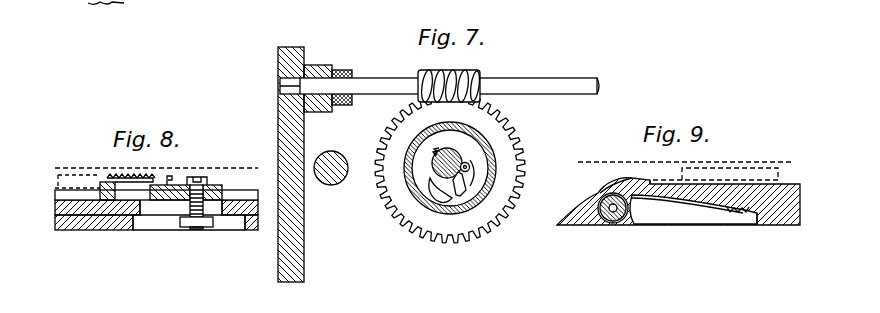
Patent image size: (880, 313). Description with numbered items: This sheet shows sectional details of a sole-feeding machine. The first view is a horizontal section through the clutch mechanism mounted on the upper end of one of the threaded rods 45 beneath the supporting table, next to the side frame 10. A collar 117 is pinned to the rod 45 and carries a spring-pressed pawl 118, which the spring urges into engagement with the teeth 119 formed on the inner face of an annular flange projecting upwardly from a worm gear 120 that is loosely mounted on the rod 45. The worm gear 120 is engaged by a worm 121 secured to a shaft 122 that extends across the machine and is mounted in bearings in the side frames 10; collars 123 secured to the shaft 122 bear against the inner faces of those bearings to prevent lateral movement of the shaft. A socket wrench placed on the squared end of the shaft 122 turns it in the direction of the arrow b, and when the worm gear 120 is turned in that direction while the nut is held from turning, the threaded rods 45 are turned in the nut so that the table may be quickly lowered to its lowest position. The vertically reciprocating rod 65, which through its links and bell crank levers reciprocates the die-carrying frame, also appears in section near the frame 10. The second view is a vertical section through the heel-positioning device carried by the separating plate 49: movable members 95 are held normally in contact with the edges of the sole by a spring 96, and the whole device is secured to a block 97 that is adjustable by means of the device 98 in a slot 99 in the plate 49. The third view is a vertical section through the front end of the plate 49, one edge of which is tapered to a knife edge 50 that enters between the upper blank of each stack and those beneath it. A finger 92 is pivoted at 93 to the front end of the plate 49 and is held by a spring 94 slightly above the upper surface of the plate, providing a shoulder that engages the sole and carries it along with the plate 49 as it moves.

In FIG. 7, the side frame 10 is at (278, 130).
In FIG. 7, the threaded rod 45 is at (436, 174).
In FIG. 8, the separating plate 49 is at (88, 222).
In FIG. 9, the separating plate 49 is at (770, 226).
In FIG. 9, the knife edge 50 is at (575, 219).
In FIG. 7, the rod 65 is at (331, 186).
In FIG. 9, the finger 92 is at (628, 188).
In FIG. 9, the pivot 93 is at (613, 223).
In FIG. 9, the spring 94 is at (690, 201).
In FIG. 8, the movable member 95 is at (103, 183).
In FIG. 8, the spring 96 is at (143, 177).
In FIG. 8, the block 97 is at (178, 195).
In FIG. 8, the adjusting device 98 is at (187, 229).
In FIG. 8, the slot 99 is at (226, 210).
In FIG. 7, the collar 117 is at (457, 186).
In FIG. 7, the spring-pressed pawl 118 is at (482, 197).
In FIG. 7, the teeth 119 is at (480, 163).
In FIG. 7, the worm gear 120 is at (488, 128).
In FIG. 7, the worm 121 is at (470, 74).
In FIG. 7, the shaft 122 is at (282, 81).
In FIG. 7, the collar 123 is at (345, 73).
In FIG. 7, the arrow b is at (376, 133).